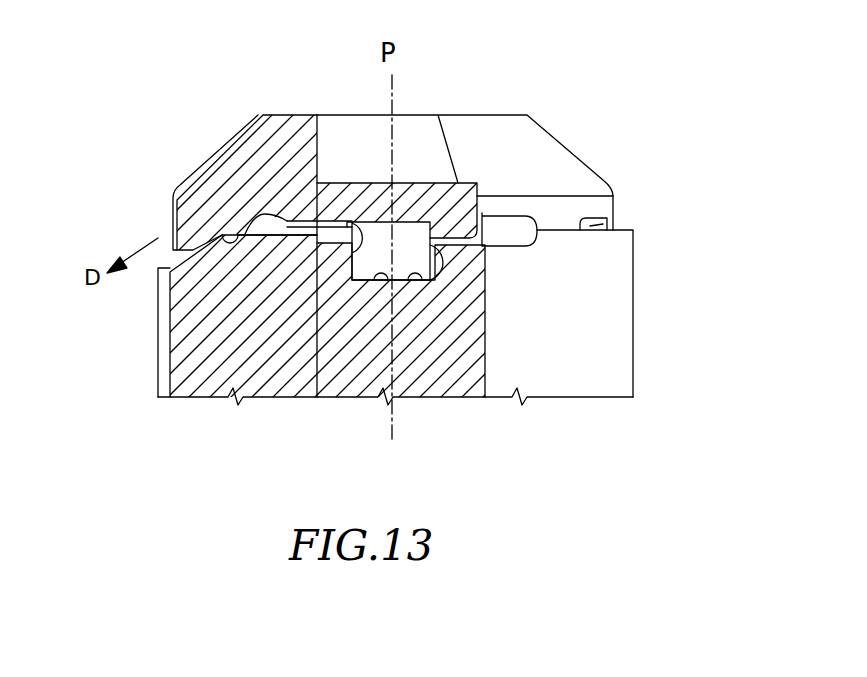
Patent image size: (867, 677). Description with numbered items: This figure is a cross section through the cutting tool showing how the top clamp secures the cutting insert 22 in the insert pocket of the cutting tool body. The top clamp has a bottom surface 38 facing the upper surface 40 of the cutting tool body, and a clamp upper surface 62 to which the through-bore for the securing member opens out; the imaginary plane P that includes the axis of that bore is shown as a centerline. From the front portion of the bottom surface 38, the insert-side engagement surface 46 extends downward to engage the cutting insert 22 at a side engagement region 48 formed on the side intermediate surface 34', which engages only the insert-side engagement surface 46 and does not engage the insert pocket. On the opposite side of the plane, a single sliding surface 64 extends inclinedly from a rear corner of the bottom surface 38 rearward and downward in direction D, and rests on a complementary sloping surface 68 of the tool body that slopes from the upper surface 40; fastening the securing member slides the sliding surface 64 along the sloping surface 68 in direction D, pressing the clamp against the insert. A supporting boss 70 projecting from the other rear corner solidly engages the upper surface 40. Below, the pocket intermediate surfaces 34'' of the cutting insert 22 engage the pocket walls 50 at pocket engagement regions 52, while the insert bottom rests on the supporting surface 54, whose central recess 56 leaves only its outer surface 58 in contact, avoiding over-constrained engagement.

The clamp upper surface 62 is at (337, 115).
The sliding surface 64 is at (238, 235).
The sloping surface 68 is at (221, 236).
The bottom surface 38 is at (288, 217).
The cutting insert 22 is at (408, 238).
The insert-side engagement surface 46 is at (463, 186).
The upper surface 40 is at (553, 230).
The supporting boss 70 is at (600, 223).
The side engagement region 48 is at (485, 265).
The side intermediate surface 34' is at (462, 260).
The pocket intermediate surfaces 34'' is at (306, 260).
The pocket walls 50 is at (315, 255).
The pocket engagement regions 52 is at (318, 270).
The central recess 56 is at (376, 276).
The supporting surface 54 is at (418, 276).
The outer surface 58 is at (436, 262).